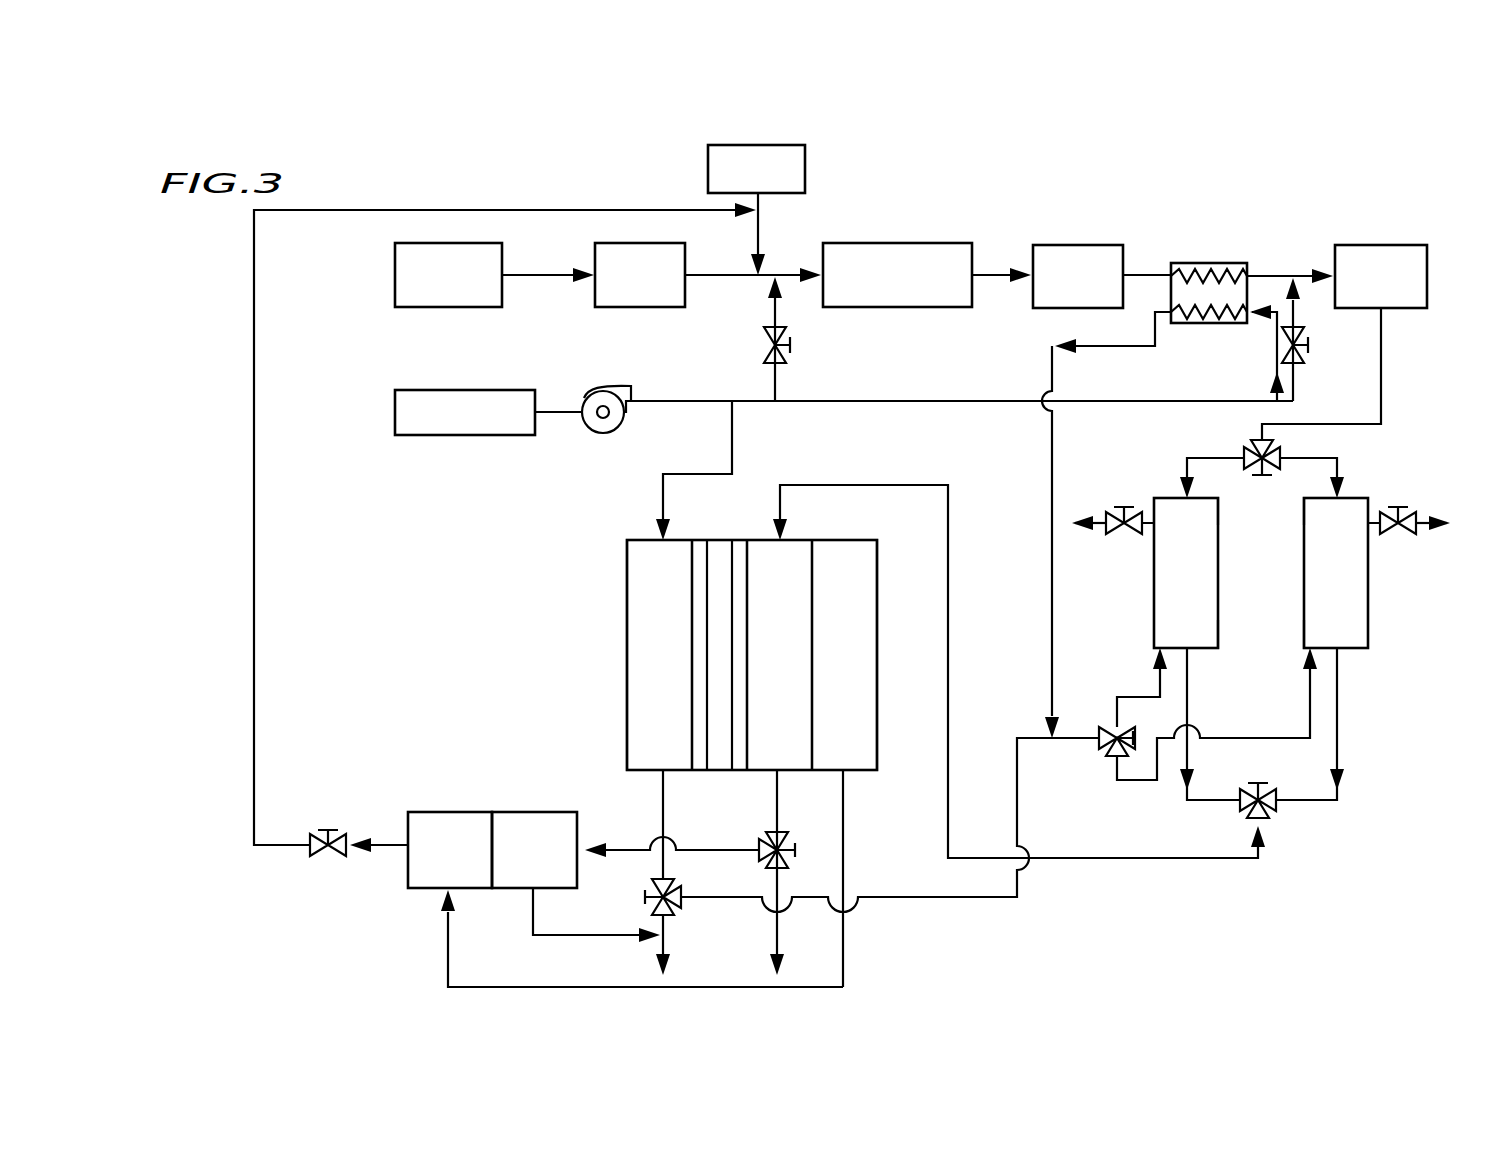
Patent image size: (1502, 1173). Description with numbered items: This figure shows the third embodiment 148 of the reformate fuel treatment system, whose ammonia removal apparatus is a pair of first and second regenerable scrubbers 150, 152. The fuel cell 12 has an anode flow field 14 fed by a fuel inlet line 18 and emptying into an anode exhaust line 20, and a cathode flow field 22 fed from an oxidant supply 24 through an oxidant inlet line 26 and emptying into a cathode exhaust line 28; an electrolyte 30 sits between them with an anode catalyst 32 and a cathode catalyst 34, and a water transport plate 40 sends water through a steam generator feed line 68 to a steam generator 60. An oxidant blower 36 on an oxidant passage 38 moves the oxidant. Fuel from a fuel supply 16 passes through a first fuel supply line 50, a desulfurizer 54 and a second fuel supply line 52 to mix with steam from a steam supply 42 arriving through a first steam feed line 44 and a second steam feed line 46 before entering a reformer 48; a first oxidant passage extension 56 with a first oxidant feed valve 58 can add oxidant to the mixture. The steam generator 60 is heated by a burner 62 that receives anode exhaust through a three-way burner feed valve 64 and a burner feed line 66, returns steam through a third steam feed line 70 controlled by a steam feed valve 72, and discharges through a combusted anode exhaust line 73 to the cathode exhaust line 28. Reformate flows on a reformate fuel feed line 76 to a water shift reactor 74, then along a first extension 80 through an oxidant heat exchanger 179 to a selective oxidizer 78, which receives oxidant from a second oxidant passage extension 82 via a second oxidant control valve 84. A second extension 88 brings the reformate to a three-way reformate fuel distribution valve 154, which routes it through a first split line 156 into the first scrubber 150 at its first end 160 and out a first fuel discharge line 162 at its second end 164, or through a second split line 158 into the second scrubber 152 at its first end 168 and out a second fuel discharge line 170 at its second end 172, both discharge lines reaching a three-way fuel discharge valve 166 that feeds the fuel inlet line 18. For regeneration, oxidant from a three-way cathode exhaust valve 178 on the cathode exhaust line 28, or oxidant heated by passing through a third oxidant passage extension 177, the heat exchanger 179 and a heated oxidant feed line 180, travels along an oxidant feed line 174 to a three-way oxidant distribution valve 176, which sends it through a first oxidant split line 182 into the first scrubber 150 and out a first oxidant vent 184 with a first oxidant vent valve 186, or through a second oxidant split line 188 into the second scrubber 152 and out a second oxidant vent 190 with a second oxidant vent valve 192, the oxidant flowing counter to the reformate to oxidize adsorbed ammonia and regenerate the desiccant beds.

The fuel cell 12 is at (711, 639).
The anode flow field 14 is at (793, 666).
The fuel supply component 16 is at (402, 275).
The fuel inlet line 18 is at (840, 485).
The anode exhaust line 20 is at (843, 803).
The cathode flow field 22 is at (669, 666).
The oxidant supply component 24 is at (455, 435).
The oxidant inlet line 26 is at (735, 465).
The cathode exhaust line 28 is at (660, 820).
The electrolyte 30 is at (717, 553).
The anode catalyst 32 is at (742, 765).
The cathode catalyst 34 is at (702, 765).
The oxidant blower 36 is at (607, 430).
The oxidant passage 38 is at (690, 401).
The water transport plate 40 is at (858, 666).
The steam supply 42 is at (708, 183).
The first steam feed line 44 is at (758, 235).
The second steam feed line 46 is at (787, 277).
The reformer 48 is at (905, 243).
The first fuel supply line 50 is at (535, 275).
The second fuel supply line 52 is at (724, 275).
The desulfurizer means 54 is at (652, 297).
The first oxidant passage extension 56 is at (770, 322).
The first oxidant feed valve 58 is at (784, 360).
The steam generator 60 is at (476, 868).
The burner 62 is at (563, 868).
The three-way burner feed valve 64 is at (783, 857).
The burner feed line 66 is at (690, 853).
The steam generator feed line 68 is at (628, 987).
The third steam feed line 70 is at (254, 685).
The steam feed valve 72 is at (330, 828).
The combusted anode exhaust line 73 is at (590, 933).
The water shift reactor 74 is at (1090, 250).
The reformate fuel feed line 76 is at (990, 275).
The selective oxidizer 78 is at (1385, 262).
The first extension of the reformate fuel feed line 80 is at (1152, 275).
The second oxidant passage extension 82 is at (970, 401).
The second oxidant control valve 84 is at (1298, 362).
The second extension of the reformate fuel feed line 88 is at (1381, 345).
The third embodiment of the reformate fuel treatment system 148 is at (1351, 180).
The first regenerable scrubber 150 is at (1168, 608).
The second regenerable scrubber 152 is at (1350, 593).
The three way reformate fuel distribution valve 154 is at (1255, 450).
The first split line 156 is at (1207, 457).
The second split line 158 is at (1318, 458).
The first end of the first regenerable scrubber 160 is at (1200, 500).
The first fuel discharge line 162 is at (1190, 700).
The second end of the first regenerable scrubber 164 is at (1200, 645).
The three way fuel discharge valve 166 is at (1248, 790).
The first end of the second regenerable scrubber 168 is at (1325, 500).
The second fuel discharge line 170 is at (1340, 700).
The second end of the second regenerable scrubber 172 is at (1352, 645).
The oxidant feed line 174 is at (1017, 887).
The three way oxidant distribution valve 176 is at (1100, 750).
The third oxidant passage extension 177 is at (1275, 352).
The three way cathode exhaust valve 178 is at (675, 912).
The oxidant heat exchanger 179 is at (1200, 265).
The heated oxidant feed line 180 is at (1050, 548).
The first oxidant split line 182 is at (1140, 693).
The first oxidant vent 184 is at (1085, 528).
The first oxidant vent valve 186 is at (1115, 512).
The second bed purge conduit 188 is at (1255, 738).
The second oxidant vent 190 is at (1428, 515).
The second oxidant vent valve 192 is at (1408, 512).